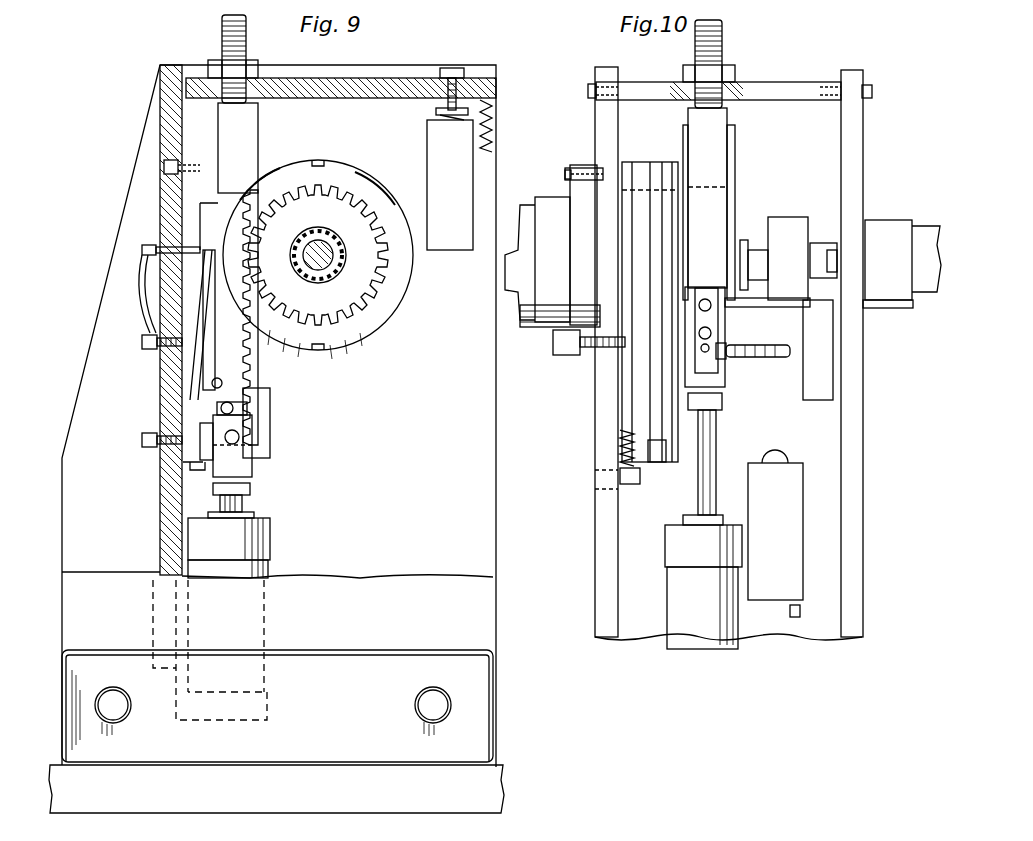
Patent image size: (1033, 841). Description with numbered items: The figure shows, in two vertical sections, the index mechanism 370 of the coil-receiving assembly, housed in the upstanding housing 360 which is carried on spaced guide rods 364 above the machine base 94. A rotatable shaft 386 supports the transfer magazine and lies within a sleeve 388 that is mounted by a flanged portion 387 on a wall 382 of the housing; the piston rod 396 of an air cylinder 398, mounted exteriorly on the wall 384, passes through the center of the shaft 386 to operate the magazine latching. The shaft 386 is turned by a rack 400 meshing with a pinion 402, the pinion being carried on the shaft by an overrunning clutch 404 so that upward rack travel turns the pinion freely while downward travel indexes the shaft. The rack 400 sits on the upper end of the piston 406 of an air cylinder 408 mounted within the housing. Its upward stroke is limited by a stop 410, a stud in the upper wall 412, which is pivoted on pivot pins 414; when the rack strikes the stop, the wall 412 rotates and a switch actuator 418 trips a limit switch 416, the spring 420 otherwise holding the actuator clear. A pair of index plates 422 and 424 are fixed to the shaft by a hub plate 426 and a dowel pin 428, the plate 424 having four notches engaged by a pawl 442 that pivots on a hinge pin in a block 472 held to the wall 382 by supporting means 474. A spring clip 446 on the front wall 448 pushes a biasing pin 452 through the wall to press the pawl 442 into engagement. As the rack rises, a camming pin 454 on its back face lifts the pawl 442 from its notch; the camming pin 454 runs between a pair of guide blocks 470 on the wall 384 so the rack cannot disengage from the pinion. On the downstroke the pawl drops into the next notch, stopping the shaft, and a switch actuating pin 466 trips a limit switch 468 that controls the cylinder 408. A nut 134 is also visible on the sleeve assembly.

In FIG. 9, the base 94 is at (503, 783).
In FIG. 10, the nut 134 is at (571, 366).
In FIG. 10, the housing 360 is at (589, 518).
In FIG. 9, the guide rods 364 is at (453, 707).
In FIG. 9, the index mechanism 370 is at (325, 360).
In FIG. 10, the wall 382 is at (596, 604).
In FIG. 10, the wall 384 is at (864, 416).
In FIG. 9, the rotatable shaft 386 is at (347, 262).
In FIG. 10, the rotatable shaft 386 is at (534, 312).
In FIG. 10, the flanged portion 387 is at (583, 165).
In FIG. 10, the sleeve 388 is at (550, 198).
In FIG. 10, the piston rod 396 is at (755, 245).
In FIG. 10, the air cylinder 398 is at (922, 215).
In FIG. 9, the rack 400 is at (262, 388).
In FIG. 9, the pinion 402 is at (375, 292).
In FIG. 9, the overrunning clutch 404 is at (352, 340).
In FIG. 9, the piston 406 is at (247, 507).
In FIG. 10, the piston 406 is at (696, 505).
In FIG. 9, the air cylinder 408 is at (272, 545).
In FIG. 10, the air cylinder 408 is at (668, 592).
In FIG. 9, the stop 410 is at (222, 30).
In FIG. 10, the stop 410 is at (722, 53).
In FIG. 9, the upper wall 412 is at (364, 97).
In FIG. 10, the upper wall 412 is at (781, 86).
In FIG. 10, the pivot pins 414 is at (873, 91).
In FIG. 9, the limit switch 416 is at (427, 153).
In FIG. 9, the switch actuator 418 is at (445, 100).
In FIG. 9, the spring 420 is at (496, 112).
In FIG. 10, the spring 420 is at (622, 410).
In FIG. 10, the index plate 422 is at (657, 162).
In FIG. 10, the index plate 424 is at (672, 162).
In FIG. 10, the hub plate 426 is at (640, 162).
In FIG. 10, the dowel pin 428 is at (622, 203).
In FIG. 9, the pawl 442 is at (192, 352).
In FIG. 9, the spring clip 446 is at (143, 298).
In FIG. 9, the front wall 448 is at (190, 372).
In FIG. 9, the biasing pin 452 is at (145, 247).
In FIG. 9, the camming pin 454 is at (200, 405).
In FIG. 10, the camming pin 454 is at (770, 309).
In FIG. 10, the switch actuating pin 466 is at (770, 360).
In FIG. 10, the limit switch 468 is at (762, 455).
In FIG. 10, the guide blocks 470 is at (833, 355).
In FIG. 10, the block 472 is at (676, 465).
In FIG. 10, the supporting means 474 is at (632, 488).